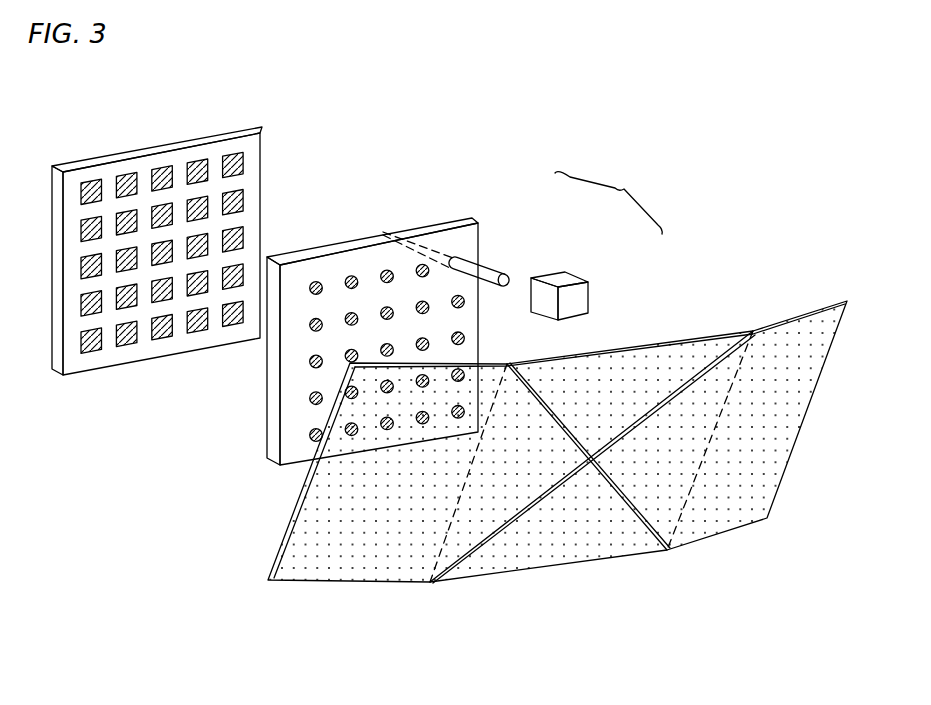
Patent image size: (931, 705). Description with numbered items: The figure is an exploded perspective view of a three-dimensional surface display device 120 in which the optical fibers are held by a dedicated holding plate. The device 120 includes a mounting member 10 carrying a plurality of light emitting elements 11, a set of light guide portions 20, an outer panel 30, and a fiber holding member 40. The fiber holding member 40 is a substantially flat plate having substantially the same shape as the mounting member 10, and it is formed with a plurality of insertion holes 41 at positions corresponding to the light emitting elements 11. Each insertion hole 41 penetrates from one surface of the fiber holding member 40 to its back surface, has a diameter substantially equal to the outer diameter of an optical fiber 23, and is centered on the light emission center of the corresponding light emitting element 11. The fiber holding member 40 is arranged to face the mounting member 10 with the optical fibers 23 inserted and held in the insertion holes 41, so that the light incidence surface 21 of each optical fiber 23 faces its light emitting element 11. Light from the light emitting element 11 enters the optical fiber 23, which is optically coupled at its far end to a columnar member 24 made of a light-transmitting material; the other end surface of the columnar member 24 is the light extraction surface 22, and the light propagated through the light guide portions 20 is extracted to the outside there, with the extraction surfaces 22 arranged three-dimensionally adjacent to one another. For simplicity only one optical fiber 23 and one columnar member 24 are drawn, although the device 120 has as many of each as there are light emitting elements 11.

The mounting member 10 is at (184, 226).
The light emitting element 11 is at (153, 177).
The light guide portion 20 is at (523, 241).
The light incidence surface 21 is at (383, 227).
The light extraction surface 22 is at (599, 267).
The optical fiber 23 is at (497, 270).
The columnar member 24 is at (568, 278).
The outer panel 30 is at (778, 448).
The fiber holding member 40 is at (372, 315).
The insertion hole 41 is at (310, 360).
The three-dimensional surface display device 120 is at (450, 380).